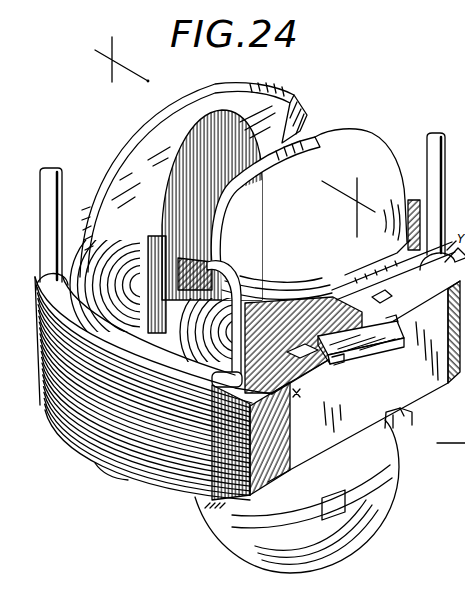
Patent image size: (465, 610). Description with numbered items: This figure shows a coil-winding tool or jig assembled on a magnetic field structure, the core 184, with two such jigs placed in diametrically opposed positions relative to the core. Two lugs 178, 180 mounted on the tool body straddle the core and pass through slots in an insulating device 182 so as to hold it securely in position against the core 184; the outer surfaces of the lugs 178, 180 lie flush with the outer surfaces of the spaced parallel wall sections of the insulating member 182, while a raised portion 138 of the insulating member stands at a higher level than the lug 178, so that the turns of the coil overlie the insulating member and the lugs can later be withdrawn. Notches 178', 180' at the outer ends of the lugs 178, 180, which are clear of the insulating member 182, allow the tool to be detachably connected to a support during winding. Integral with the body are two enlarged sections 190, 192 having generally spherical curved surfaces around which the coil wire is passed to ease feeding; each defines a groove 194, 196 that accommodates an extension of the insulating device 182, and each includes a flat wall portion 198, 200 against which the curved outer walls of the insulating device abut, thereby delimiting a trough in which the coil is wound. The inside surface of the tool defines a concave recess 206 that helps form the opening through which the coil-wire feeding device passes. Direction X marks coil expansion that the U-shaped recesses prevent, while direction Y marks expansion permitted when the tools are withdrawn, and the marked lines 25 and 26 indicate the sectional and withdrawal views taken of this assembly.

The section line 25- 25 is at (355, 205).
The section line 26- 26 is at (441, 443).
The raised portion 138 is at (303, 363).
The lug 178 is at (391, 378).
The notch 178' is at (413, 312).
The lug 180 is at (386, 413).
The notch 180' is at (424, 418).
The insulating device 182 is at (299, 473).
The core 184 is at (84, 449).
The spherical section 190 is at (365, 147).
The spherical section 192 is at (329, 550).
The groove 194 is at (382, 264).
The groove 196 is at (375, 497).
The flat wall portion 198 is at (312, 300).
The flat wall portion 200 is at (228, 513).
The concave recess 206 is at (209, 125).